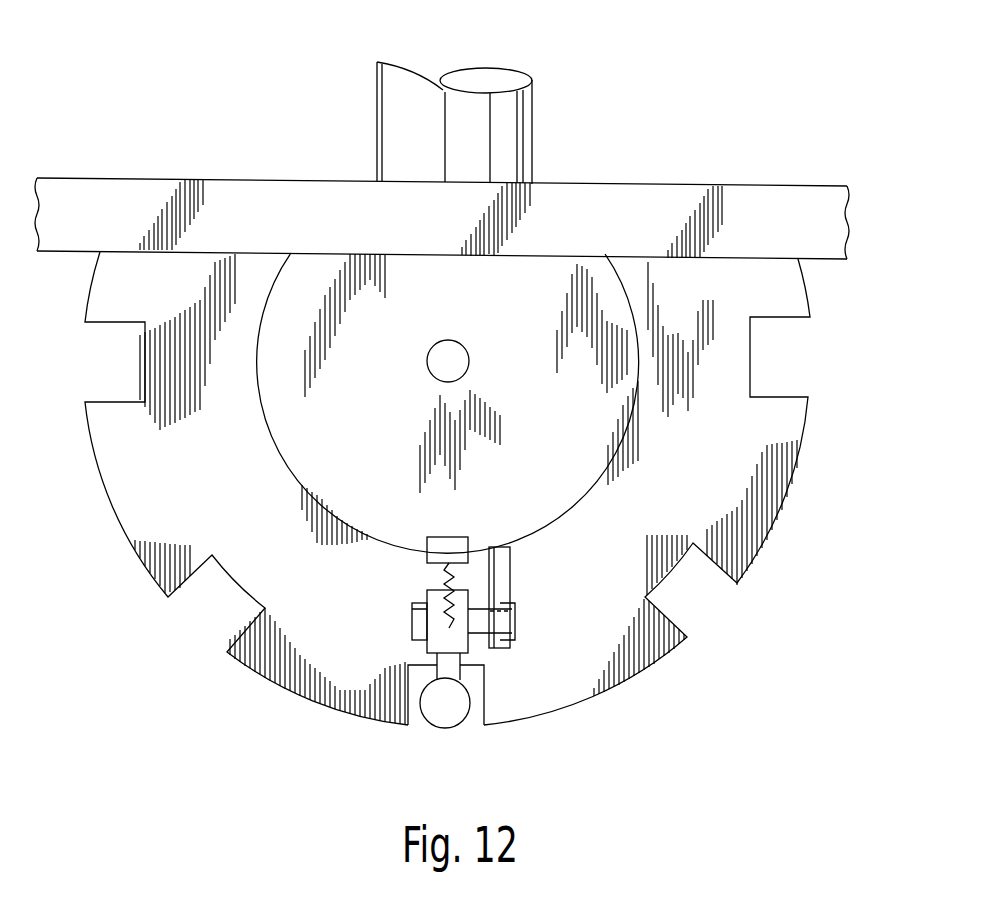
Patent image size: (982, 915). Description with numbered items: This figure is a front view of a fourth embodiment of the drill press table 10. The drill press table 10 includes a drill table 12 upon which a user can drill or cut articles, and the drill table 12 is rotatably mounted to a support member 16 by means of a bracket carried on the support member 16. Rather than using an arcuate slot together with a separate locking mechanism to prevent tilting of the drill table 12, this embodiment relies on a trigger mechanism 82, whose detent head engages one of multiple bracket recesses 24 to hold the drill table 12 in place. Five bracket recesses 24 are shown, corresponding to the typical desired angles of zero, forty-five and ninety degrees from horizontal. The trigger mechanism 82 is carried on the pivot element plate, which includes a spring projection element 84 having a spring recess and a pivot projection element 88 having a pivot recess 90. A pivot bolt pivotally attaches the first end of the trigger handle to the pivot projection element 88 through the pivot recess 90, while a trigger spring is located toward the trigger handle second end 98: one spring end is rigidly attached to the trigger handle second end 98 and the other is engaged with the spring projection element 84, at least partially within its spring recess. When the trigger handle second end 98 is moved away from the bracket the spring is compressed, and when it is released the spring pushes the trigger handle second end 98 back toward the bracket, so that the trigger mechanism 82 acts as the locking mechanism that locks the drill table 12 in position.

The drill press table 10 is at (140, 128).
The drill table 12 is at (645, 184).
The support member 16 is at (530, 137).
The bracket recess 24 is at (127, 375).
The trigger mechanism 82 is at (557, 600).
The spring projection element 84 is at (427, 553).
The pivot projection element 88 is at (502, 580).
The pivot recess 90 is at (500, 630).
The trigger handle second end 98 is at (452, 730).